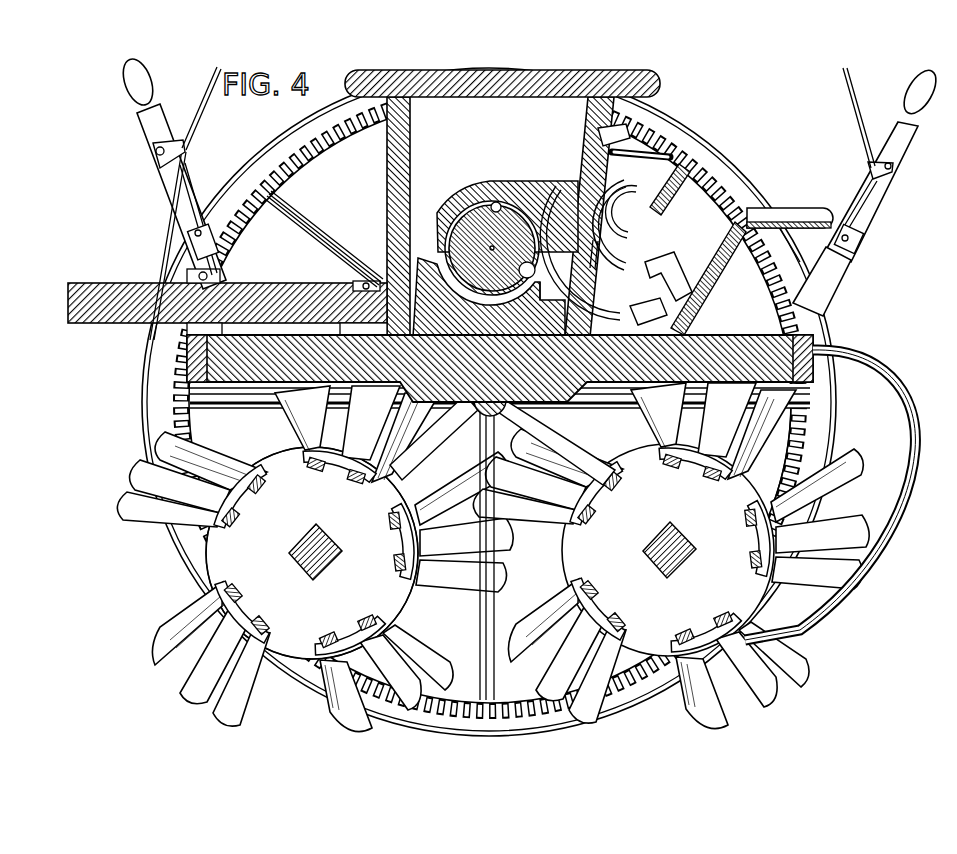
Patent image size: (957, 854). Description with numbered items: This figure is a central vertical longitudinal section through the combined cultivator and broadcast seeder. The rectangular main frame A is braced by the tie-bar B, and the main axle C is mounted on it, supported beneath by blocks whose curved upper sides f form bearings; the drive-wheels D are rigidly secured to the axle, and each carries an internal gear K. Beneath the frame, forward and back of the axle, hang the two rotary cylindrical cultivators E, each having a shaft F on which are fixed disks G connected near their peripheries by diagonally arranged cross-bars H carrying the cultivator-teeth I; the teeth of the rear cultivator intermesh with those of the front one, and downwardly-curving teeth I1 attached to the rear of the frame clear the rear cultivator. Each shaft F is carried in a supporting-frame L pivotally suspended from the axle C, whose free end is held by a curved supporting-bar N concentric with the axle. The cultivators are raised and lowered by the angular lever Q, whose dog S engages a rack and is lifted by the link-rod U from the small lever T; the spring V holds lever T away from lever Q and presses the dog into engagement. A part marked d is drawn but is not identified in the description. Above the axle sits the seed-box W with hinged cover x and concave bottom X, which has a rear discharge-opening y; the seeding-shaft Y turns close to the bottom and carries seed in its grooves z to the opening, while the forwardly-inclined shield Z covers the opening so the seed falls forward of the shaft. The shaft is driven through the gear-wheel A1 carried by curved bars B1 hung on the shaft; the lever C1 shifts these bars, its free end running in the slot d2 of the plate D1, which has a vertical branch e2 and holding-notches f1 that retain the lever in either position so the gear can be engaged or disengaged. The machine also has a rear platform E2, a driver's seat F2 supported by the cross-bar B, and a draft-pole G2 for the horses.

The hinged cover x is at (502, 71).
The spring V is at (178, 142).
The small angular lever T is at (528, 117).
The angular lever Q is at (530, 197).
The link-rod U is at (190, 192).
The seed-box W is at (387, 178).
The seeding-grooves z is at (493, 205).
The shield Z is at (548, 192).
The curved bearing surface f is at (626, 134).
The lever C1 is at (662, 153).
The slot d2 is at (630, 170).
The vertical branch e2 is at (648, 207).
The plate D1 is at (656, 234).
The driver's seat F2 is at (790, 206).
The dog S is at (193, 243).
The bottom X is at (500, 217).
The seeding-shaft Y is at (529, 273).
The discharge-opening y is at (549, 291).
The holding-notches f1 is at (597, 254).
The curved supporting-bar N is at (671, 274).
The curved bars B1 is at (582, 253).
The gear-wheel A1 is at (632, 313).
The rear platform E2 is at (725, 330).
The draft-pole G2 is at (96, 290).
The main frame A is at (189, 358).
The drive-wheels D is at (155, 409).
The disks G is at (287, 450).
The cross-bars H is at (262, 481).
The main axle C is at (473, 410).
The lever arm d is at (541, 410).
The tie-bar B is at (638, 386).
The supporting-frame L is at (434, 437).
The cultivator-teeth I is at (136, 518).
The rotary cylindrical cultivators E is at (490, 551).
The cultivator shaft F is at (336, 540).
The internal gear K is at (795, 449).
The downwardly-curving teeth I1 is at (905, 418).